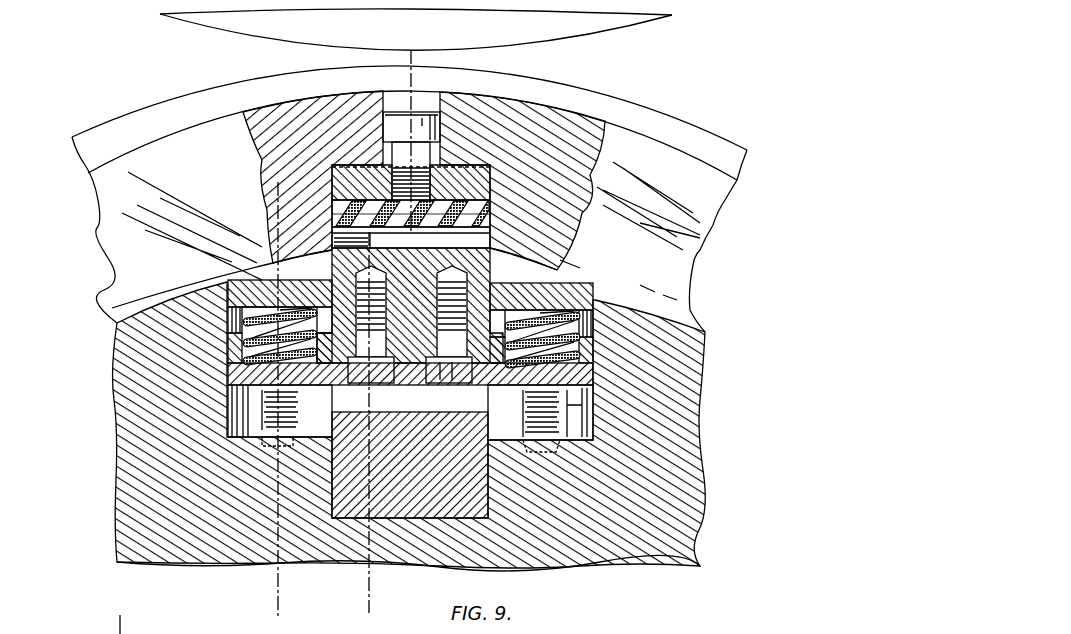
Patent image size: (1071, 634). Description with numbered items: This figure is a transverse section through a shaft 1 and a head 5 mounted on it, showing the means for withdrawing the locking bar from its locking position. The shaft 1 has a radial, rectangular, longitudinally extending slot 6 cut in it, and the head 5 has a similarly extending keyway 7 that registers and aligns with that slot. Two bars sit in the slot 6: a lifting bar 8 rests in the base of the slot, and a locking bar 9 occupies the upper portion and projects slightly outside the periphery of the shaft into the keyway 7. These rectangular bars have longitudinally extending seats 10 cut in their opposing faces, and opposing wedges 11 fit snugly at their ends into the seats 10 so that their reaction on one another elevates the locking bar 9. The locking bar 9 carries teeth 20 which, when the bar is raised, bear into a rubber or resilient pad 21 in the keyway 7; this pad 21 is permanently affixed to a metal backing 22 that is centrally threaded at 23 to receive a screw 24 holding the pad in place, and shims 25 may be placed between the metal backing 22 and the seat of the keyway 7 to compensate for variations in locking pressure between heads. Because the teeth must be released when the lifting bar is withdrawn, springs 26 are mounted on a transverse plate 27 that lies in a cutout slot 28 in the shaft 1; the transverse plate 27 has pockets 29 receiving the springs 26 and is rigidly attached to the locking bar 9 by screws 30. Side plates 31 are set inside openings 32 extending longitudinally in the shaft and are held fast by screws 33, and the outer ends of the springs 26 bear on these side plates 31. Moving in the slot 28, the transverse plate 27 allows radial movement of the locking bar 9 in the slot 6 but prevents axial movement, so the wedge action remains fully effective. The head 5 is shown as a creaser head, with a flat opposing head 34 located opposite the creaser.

The shaft 1 is at (115, 488).
The head 5 is at (706, 208).
The slot 6 is at (431, 519).
The keyway 7 is at (333, 196).
The lifting bar 8 is at (462, 510).
The locking bar 9 is at (553, 262).
The seat 10 is at (275, 205).
The wedge 11 is at (409, 57).
The teeth 20 is at (332, 232).
The resilient pad 21 is at (332, 207).
The metal backing 22 is at (490, 168).
The threaded portion 23 is at (443, 168).
The screw 24 is at (440, 112).
The shim 25 is at (367, 164).
The spring 26 is at (240, 350).
The transverse plate 27 is at (235, 373).
The cutout slot 28 is at (262, 408).
The pocket 29 is at (228, 338).
The screw 30 is at (446, 368).
The side plate 31 is at (490, 265).
The opening 32 is at (230, 306).
The screw 33 is at (228, 433).
The flat opposing head 34 is at (290, 30).